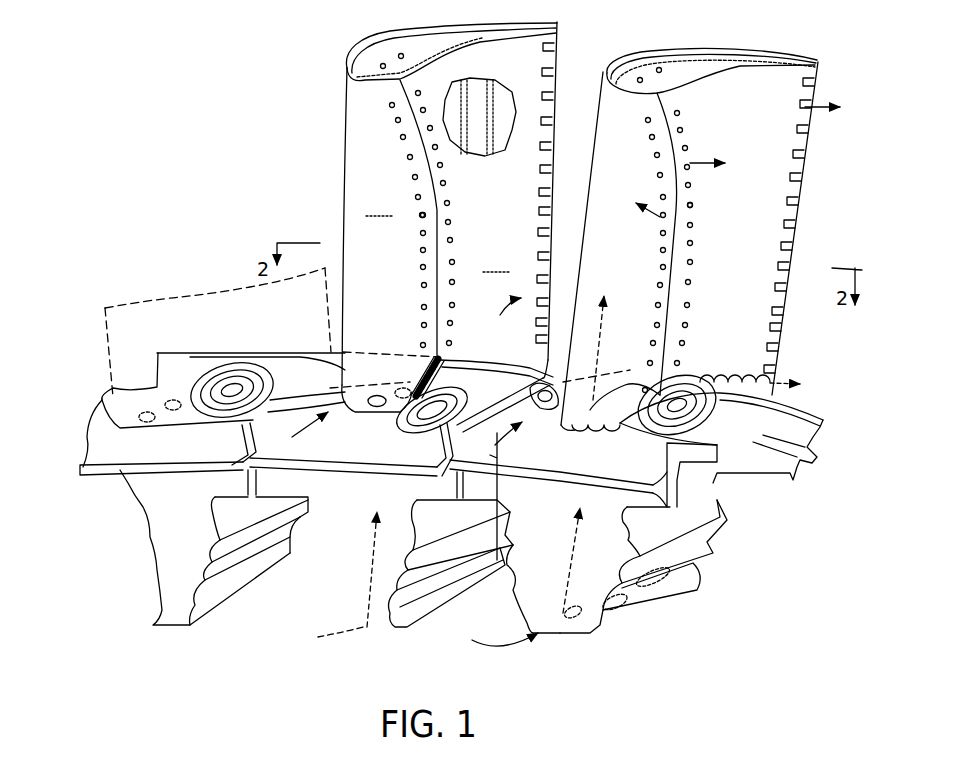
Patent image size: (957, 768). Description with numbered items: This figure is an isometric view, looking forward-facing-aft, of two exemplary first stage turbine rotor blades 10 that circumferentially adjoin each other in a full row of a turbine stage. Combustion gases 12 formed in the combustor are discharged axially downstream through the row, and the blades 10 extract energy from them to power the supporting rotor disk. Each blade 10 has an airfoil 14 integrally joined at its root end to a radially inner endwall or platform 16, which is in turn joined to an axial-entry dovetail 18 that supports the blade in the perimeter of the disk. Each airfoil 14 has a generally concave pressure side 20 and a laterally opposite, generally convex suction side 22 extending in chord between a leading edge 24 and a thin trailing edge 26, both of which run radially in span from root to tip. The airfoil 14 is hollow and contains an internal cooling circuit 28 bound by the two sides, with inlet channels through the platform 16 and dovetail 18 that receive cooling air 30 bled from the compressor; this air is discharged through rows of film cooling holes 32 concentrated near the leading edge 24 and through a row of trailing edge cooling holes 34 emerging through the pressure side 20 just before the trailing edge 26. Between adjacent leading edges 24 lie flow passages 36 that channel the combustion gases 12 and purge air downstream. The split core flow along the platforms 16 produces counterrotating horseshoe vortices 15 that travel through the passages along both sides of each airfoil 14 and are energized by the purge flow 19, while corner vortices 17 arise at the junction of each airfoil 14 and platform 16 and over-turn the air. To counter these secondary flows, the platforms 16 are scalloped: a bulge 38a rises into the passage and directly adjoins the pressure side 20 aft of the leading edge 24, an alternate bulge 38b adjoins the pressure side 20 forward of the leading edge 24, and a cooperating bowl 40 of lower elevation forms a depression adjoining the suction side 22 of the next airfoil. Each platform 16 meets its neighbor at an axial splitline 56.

The turbine rotor blade 10 is at (303, 113).
The combustion gases 12 is at (318, 187).
The airfoil 14 is at (597, 72).
The horseshoe vortices 15 is at (745, 372).
The platform 16 is at (78, 427).
The corner vortices 17 is at (425, 362).
The axial-entry dovetail 18 is at (303, 583).
The purge flow 19 is at (300, 440).
The pressure side 20 is at (496, 262).
The suction side 22 is at (379, 206).
The leading edge 24 is at (445, 213).
The trailing edge 26 is at (593, 110).
The internal cooling circuit 28 is at (476, 95).
The cooling air 30 is at (705, 160).
The film cooling holes 32 is at (696, 206).
The trailing edge cooling holes 34 is at (780, 262).
The flow passages 36 is at (498, 319).
The bulge 38a is at (226, 357).
The bulge 38b is at (430, 418).
The bowl 40 is at (322, 512).
The axial splitline 56 is at (233, 433).